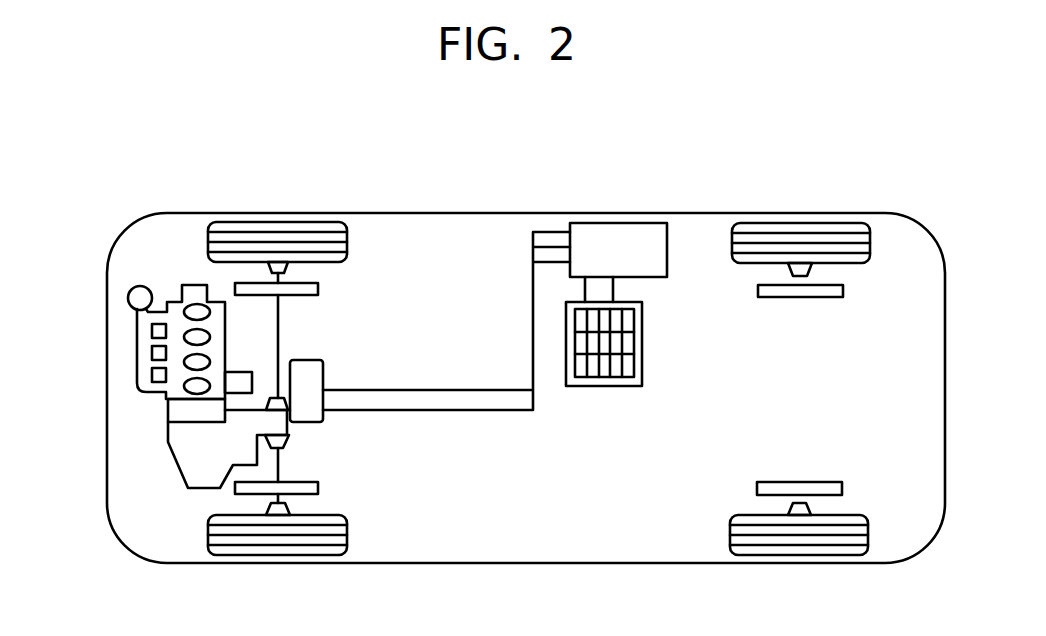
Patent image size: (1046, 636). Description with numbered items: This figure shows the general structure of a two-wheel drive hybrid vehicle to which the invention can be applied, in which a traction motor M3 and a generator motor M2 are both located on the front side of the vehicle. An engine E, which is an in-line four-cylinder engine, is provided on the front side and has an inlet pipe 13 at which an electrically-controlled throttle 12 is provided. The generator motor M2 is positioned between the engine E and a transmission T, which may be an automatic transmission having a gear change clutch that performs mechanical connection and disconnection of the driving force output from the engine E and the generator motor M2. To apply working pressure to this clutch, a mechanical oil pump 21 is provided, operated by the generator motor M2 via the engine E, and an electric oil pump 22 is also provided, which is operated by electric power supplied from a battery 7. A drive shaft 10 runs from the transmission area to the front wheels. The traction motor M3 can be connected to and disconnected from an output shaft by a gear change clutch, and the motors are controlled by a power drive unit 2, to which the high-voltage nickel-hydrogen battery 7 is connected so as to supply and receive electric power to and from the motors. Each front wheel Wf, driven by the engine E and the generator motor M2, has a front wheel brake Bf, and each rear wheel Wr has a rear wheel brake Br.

The power drive unit 2 is at (570, 223).
The battery 7 is at (600, 386).
The front drive shaft 10 is at (278, 313).
The electrically-controlled throttle 12 is at (128, 299).
The inlet pipe 13 is at (137, 343).
The mechanical oil pump 21 is at (262, 457).
The electric oil pump 22 is at (247, 368).
The engine E is at (225, 352).
The generator motor M2 is at (168, 410).
The traction motor M3 is at (323, 372).
The transmission T is at (172, 465).
The front wheel Wf is at (347, 232).
The rear wheel Wr is at (732, 238).
The front wheel brake Bf is at (318, 289).
The rear wheel brake Br is at (843, 291).